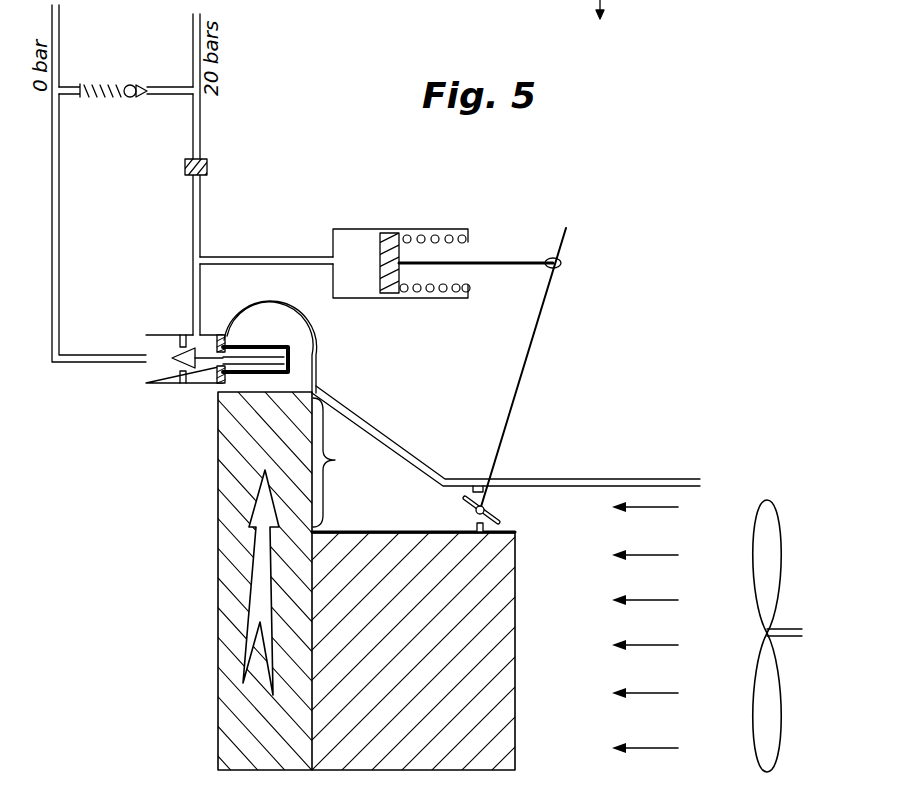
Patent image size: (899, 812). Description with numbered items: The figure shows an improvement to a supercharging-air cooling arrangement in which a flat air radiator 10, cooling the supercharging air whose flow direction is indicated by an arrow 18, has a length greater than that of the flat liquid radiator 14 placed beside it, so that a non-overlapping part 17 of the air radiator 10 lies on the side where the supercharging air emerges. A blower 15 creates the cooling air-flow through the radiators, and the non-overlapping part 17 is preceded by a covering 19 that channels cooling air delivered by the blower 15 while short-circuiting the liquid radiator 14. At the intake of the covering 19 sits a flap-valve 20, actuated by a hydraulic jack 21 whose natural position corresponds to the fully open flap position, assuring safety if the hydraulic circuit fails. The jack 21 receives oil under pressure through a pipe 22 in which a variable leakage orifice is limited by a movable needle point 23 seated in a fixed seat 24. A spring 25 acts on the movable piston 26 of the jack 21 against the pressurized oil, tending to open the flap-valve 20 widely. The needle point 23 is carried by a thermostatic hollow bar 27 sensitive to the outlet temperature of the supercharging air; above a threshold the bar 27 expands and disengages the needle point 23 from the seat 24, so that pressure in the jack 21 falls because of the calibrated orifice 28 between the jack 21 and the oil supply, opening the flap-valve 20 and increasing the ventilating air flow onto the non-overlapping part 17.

The air radiator 10 is at (233, 462).
The liquid radiator 14 is at (505, 595).
The blower 15 is at (778, 621).
The non-overlapping part 17 is at (342, 462).
The arrow 18 is at (258, 600).
The covering 19 is at (414, 462).
The flap-valve 20 is at (502, 508).
The hydraulic jack 21 is at (386, 229).
The pipe 22 is at (262, 257).
The needle point 23 is at (193, 374).
The fixed seat 24 is at (173, 335).
The spring 25 is at (451, 235).
The movable piston 26 is at (393, 295).
The hollow bar 27 is at (264, 345).
The calibrated orifice 28 is at (207, 168).